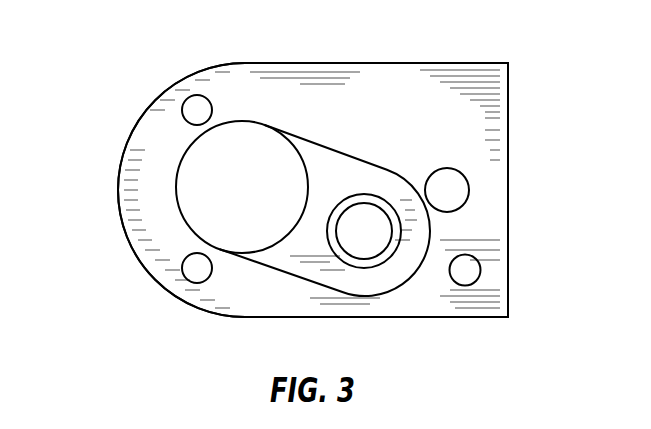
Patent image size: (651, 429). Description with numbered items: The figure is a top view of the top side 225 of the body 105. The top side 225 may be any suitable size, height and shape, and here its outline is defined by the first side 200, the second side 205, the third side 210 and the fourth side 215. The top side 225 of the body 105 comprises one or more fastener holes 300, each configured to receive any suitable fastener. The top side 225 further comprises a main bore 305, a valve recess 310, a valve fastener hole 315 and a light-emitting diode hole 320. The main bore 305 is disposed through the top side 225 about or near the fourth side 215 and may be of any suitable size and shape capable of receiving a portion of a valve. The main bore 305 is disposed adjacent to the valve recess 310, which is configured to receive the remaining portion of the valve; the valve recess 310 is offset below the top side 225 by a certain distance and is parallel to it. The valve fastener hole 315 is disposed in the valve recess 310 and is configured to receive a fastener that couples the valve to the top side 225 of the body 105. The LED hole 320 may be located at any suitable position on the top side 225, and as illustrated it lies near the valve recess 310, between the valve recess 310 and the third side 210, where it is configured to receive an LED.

The body 105 is at (126, 52).
The first side 200 is at (320, 317).
The second side 205 is at (318, 63).
The third side 210 is at (508, 217).
The fourth side 215 is at (121, 190).
The top side 225 is at (367, 75).
The fastener holes 300 is at (182, 110).
The main bore 305 is at (204, 184).
The valve recess 310 is at (290, 270).
The valve fastener hole 315 is at (364, 248).
The LED hole 320 is at (463, 190).